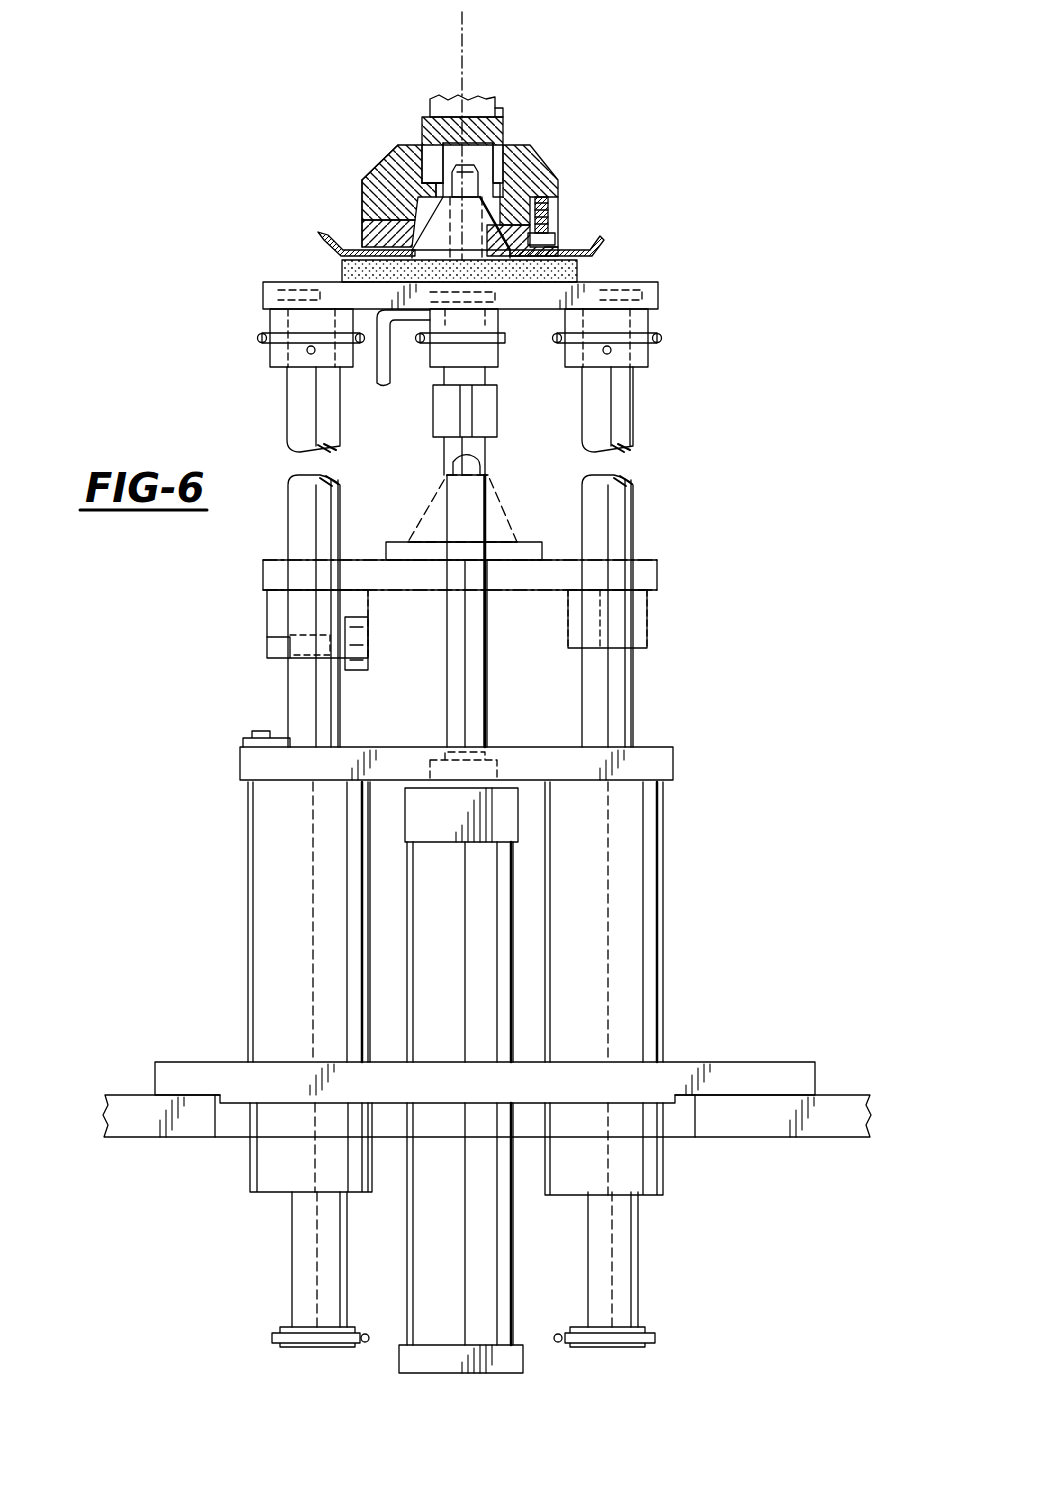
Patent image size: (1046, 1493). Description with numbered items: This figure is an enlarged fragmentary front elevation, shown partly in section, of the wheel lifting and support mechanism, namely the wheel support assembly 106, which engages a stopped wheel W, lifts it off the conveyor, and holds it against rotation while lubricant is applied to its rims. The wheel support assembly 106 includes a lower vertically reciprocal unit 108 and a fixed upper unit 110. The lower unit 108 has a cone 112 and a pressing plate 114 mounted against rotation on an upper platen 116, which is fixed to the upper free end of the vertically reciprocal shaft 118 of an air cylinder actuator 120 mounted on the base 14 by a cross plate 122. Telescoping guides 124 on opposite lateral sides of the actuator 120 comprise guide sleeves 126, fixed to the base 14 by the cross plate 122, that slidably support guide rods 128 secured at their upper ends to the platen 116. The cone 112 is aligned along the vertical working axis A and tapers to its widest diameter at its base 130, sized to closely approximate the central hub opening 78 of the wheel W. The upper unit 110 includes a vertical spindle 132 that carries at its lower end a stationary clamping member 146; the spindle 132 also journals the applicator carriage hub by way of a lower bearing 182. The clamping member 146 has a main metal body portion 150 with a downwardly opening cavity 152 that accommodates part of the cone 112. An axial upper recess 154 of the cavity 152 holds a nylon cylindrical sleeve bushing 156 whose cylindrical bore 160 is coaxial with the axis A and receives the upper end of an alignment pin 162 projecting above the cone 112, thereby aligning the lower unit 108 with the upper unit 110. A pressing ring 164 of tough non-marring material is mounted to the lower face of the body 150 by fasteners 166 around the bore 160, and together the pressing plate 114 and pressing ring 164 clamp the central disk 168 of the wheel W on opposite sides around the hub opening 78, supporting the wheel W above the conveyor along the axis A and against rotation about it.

The vertical working axis A is at (482, 40).
The base 14 is at (138, 1126).
The central hub opening 78 is at (548, 208).
The wheel support assembly 106 is at (739, 260).
The lower vertically reciprocal unit 108 is at (258, 690).
The fixed upper unit 110 is at (371, 151).
The cone 112 is at (512, 200).
The pressing plate 114 is at (352, 270).
The upper platen 116 is at (280, 304).
The vertically reciprocal shaft 118 is at (452, 708).
The air cylinder actuator 120 is at (508, 912).
The cross plate 122 is at (758, 1058).
The telescoping guides 124 is at (247, 897).
The guide sleeves 126 is at (268, 962).
The guide rods 128 is at (623, 710).
The base of cone 130 is at (423, 247).
The vertical spindle 132 is at (503, 96).
The clamping member 146 is at (358, 163).
The main metal body portion 150 is at (400, 148).
The downwardly opening cavity 152 is at (433, 205).
The axial upper recess 154 is at (428, 117).
The cylindrical sleeve bushing 156 is at (428, 182).
The cylindrical bore 160 is at (490, 150).
The alignment pin 162 is at (478, 160).
The pressing ring 164 is at (553, 232).
The fasteners 166 is at (556, 244).
The central disk 168 is at (345, 258).
The lower bearing 182 is at (297, 608).
The wheel W is at (598, 238).